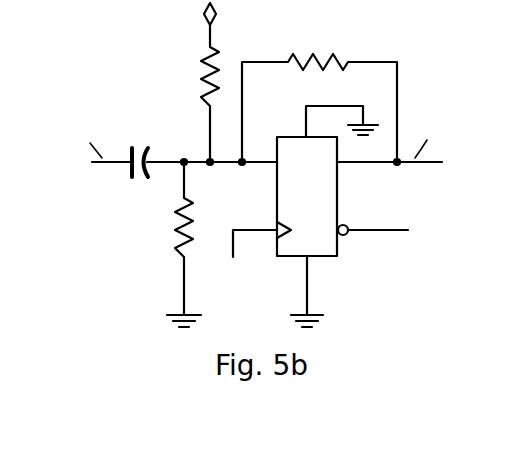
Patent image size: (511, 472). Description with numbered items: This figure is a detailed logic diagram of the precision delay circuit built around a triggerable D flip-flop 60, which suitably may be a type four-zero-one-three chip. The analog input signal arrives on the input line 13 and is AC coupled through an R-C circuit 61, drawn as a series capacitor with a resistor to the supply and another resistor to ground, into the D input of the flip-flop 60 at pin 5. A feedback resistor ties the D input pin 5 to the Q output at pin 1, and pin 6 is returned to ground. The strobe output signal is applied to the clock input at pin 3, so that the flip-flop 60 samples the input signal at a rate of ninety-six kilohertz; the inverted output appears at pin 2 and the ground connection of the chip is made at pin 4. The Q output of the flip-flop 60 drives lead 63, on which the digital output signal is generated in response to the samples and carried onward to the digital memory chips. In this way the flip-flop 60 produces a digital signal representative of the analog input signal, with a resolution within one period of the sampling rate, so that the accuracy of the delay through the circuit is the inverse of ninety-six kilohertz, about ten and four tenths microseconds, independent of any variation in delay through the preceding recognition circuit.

The input line carrying signal S13b 13 is at (120, 163).
The R-C circuit 61 is at (184, 203).
The triggerable D flip-flop 60 is at (311, 179).
The lead 63 is at (433, 165).
The flip-flop pin 1 (Q output) 1 is at (367, 173).
The flip-flop pin 2 (inverted output) 2 is at (373, 238).
The flip-flop pin 3 (clock input, STR OUT) 3 is at (246, 266).
The flip-flop pin 4 (ground) 4 is at (307, 291).
The flip-flop pin 5 (D input) 5 is at (259, 173).
The flip-flop pin 6 (grounded) 6 is at (342, 124).